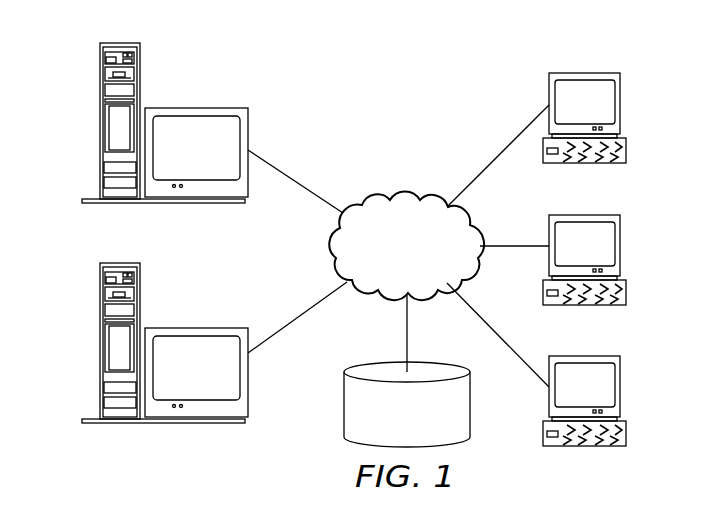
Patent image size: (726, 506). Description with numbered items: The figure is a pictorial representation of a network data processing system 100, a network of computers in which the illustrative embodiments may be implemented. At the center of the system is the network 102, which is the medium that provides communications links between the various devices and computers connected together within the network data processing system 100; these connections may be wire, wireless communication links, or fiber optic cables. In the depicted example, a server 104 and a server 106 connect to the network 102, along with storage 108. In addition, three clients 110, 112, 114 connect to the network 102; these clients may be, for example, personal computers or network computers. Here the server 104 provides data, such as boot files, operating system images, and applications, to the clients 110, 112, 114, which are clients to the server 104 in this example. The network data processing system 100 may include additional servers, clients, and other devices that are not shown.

The network data processing system 100 is at (461, 77).
The network 102 is at (376, 196).
The server 104 is at (102, 123).
The server 106 is at (102, 343).
The storage 108 is at (343, 413).
The client 110 is at (620, 103).
The client 112 is at (620, 245).
The client 114 is at (620, 385).